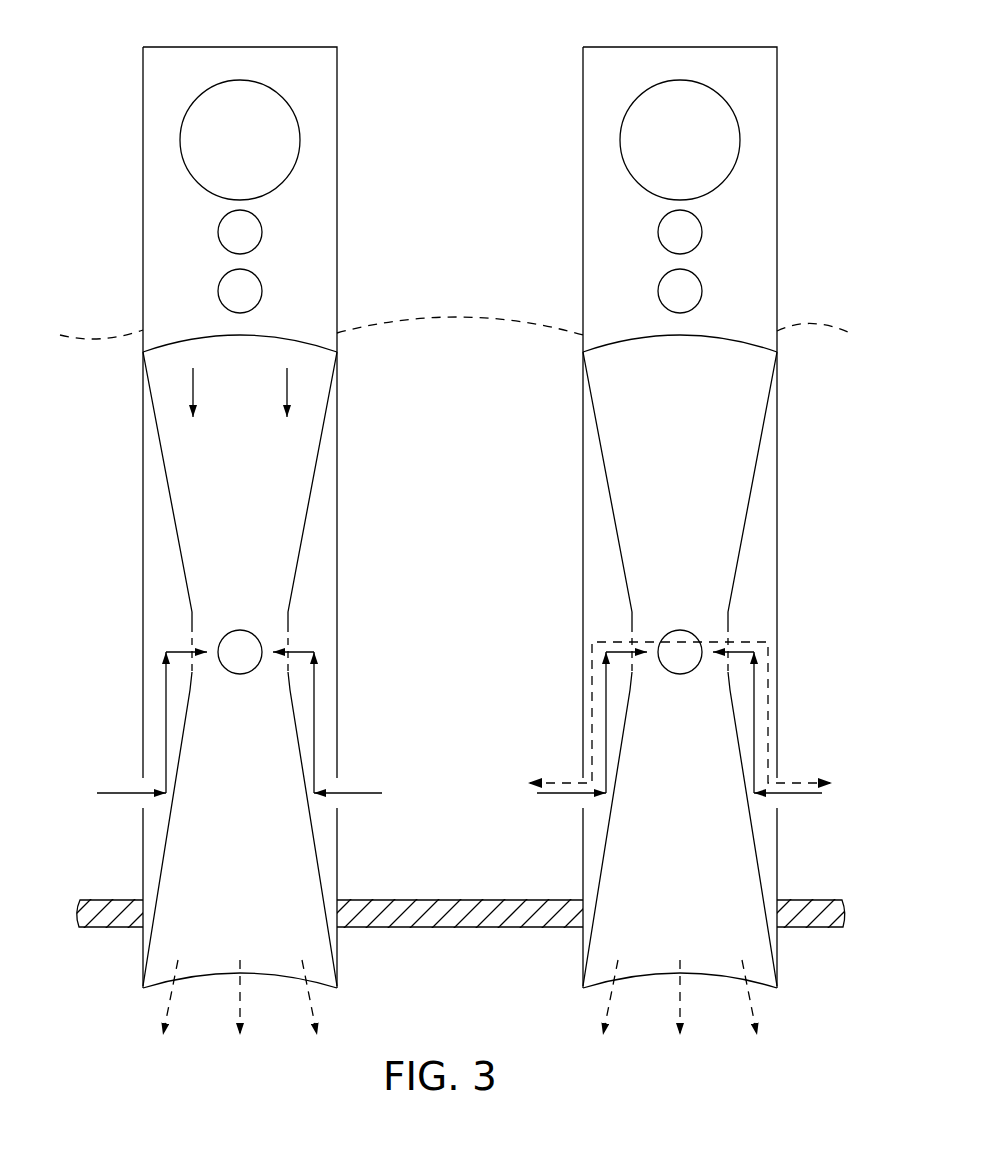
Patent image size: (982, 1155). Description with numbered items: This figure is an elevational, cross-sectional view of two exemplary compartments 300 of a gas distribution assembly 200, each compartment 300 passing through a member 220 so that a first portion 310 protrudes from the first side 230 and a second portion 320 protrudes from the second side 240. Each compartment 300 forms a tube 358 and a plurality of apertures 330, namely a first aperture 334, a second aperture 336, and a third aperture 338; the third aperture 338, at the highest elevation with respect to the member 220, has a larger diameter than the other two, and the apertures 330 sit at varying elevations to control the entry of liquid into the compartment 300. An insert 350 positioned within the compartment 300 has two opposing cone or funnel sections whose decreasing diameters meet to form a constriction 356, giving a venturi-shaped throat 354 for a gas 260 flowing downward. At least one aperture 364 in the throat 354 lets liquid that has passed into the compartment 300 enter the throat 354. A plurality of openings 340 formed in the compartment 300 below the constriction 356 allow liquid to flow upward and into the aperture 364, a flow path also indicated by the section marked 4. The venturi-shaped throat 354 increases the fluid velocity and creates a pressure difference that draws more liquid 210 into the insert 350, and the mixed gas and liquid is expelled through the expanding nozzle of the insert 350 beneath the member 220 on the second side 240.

The compartment 300 is at (157, 47).
The plurality of apertures 330 is at (368, 55).
The third aperture 338 is at (265, 97).
The second aperture 336 is at (256, 231).
The first aperture 334 is at (256, 290).
The first side 230 is at (366, 293).
The first portion 310 is at (340, 345).
The gas 260 is at (262, 397).
The gas distribution assembly 200 is at (122, 491).
The liquid 210 is at (483, 504).
The insert 350 is at (178, 553).
The tube 358 is at (779, 477).
The constriction 356 is at (163, 629).
The aperture 364 is at (238, 632).
The throat 354 is at (262, 724).
The plurality of openings 340 is at (128, 784).
The section line 4- 4 is at (682, 719).
The second portion 320 is at (340, 951).
The second side 240 is at (122, 988).
The member 220 is at (818, 921).